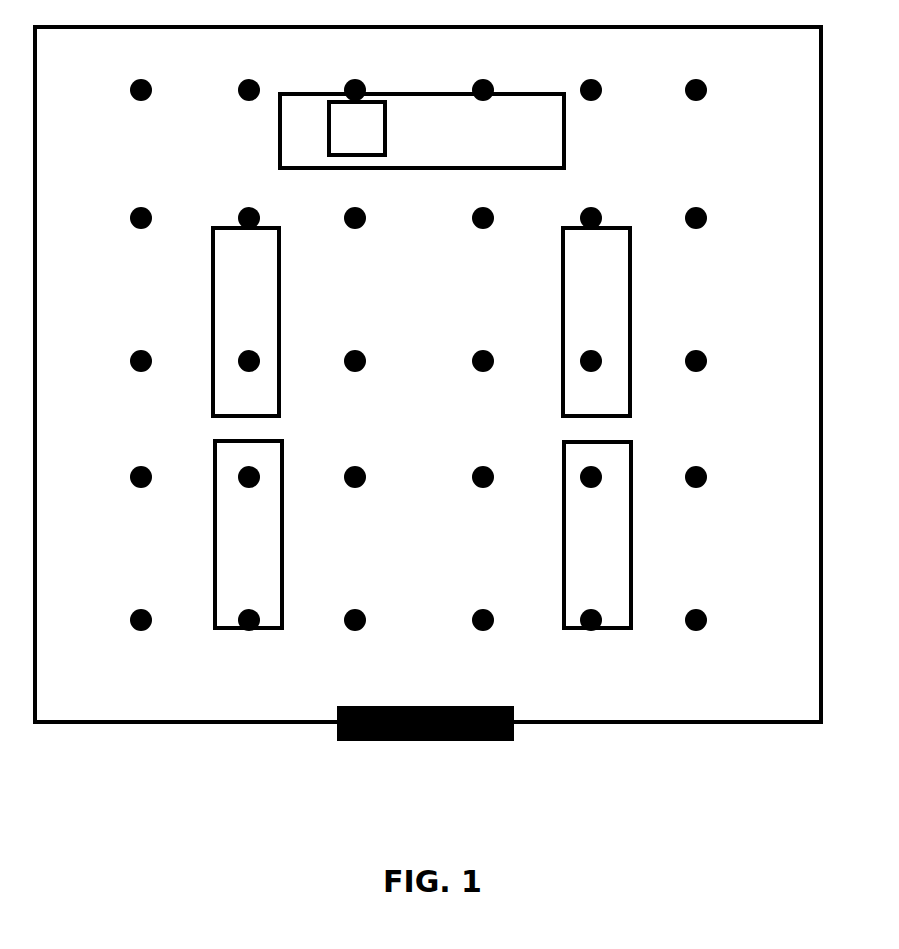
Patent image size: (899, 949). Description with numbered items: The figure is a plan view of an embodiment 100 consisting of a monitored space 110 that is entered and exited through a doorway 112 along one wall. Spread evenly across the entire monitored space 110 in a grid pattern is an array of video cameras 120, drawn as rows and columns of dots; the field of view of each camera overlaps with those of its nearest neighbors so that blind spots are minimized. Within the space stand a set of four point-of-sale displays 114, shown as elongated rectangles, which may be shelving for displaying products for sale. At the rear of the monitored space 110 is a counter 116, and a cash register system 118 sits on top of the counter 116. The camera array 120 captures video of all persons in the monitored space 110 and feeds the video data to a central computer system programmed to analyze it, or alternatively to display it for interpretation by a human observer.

The embodiment 100 is at (428, 449).
The monitored space 110 is at (190, 723).
The entry/exit doorway 112 is at (442, 742).
The point-of-sale displays 114 is at (260, 531).
The counter 116 is at (422, 131).
The cash register system 118 is at (357, 128).
The video cameras 120 is at (147, 630).